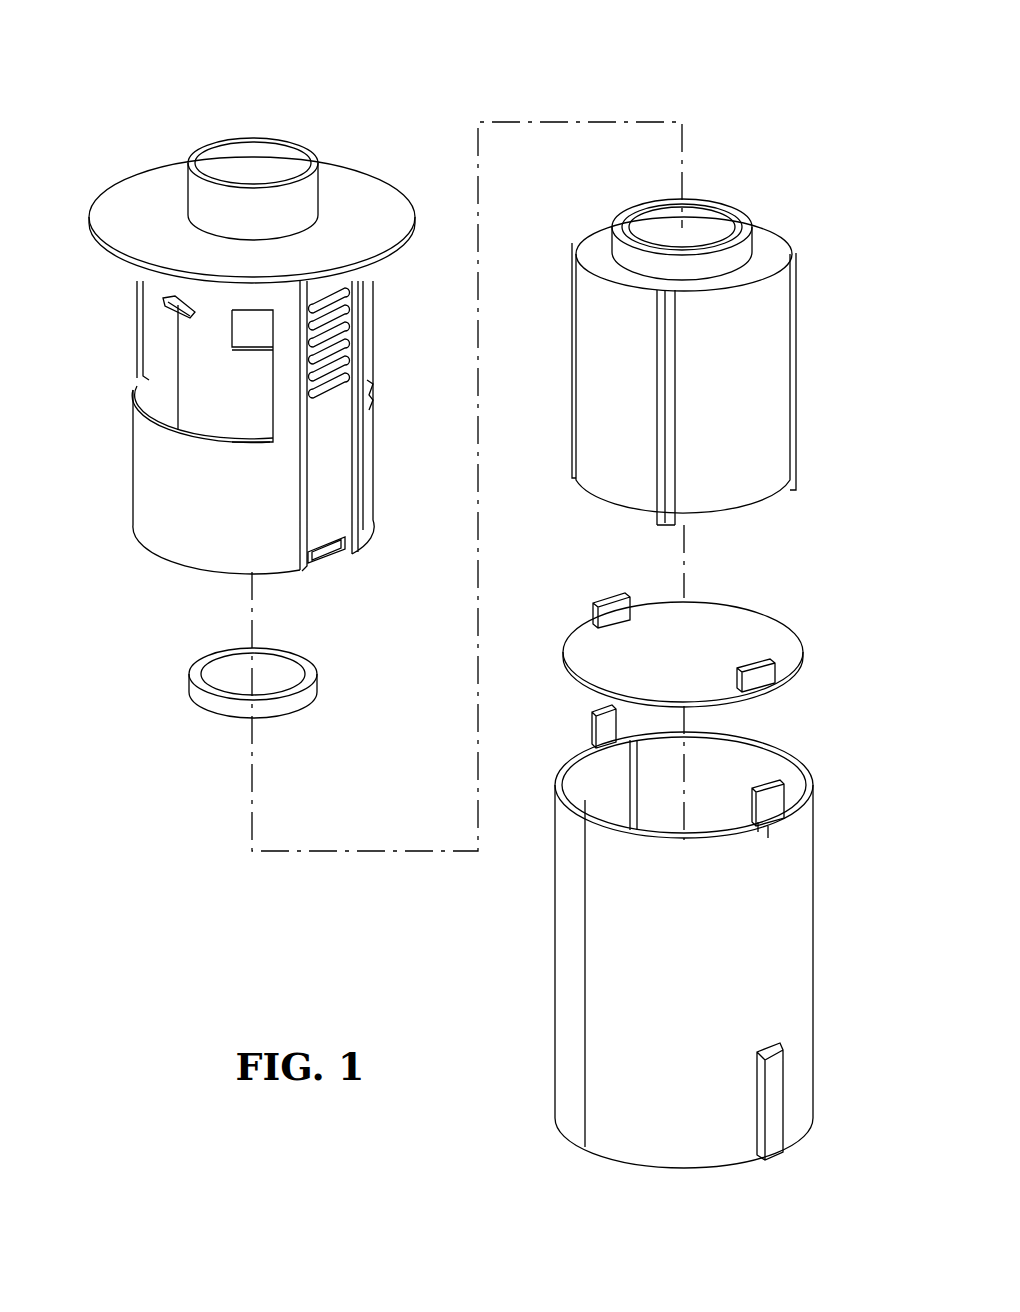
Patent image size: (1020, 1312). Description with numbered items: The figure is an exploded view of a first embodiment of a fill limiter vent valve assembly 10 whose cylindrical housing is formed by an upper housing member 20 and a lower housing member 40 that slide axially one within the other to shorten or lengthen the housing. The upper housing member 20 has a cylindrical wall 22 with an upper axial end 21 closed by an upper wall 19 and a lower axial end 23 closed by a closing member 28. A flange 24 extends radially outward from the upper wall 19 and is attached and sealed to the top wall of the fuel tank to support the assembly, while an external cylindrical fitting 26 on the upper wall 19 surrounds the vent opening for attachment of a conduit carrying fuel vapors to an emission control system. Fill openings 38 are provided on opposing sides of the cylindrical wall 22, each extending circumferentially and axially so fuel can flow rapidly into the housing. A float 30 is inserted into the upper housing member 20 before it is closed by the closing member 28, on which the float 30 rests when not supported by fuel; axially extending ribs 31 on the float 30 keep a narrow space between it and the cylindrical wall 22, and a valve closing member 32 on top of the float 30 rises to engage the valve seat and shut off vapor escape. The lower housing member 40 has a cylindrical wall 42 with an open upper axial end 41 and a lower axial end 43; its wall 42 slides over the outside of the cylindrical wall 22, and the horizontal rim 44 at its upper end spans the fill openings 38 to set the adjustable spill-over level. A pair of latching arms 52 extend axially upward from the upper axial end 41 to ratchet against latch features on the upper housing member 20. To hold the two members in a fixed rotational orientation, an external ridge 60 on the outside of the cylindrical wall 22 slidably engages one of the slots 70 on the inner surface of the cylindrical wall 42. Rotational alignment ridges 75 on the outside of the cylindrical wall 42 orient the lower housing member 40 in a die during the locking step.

The fill limiter vent valve assembly 10 is at (112, 98).
The upper housing member 20 is at (405, 103).
The upper wall 19 is at (173, 213).
The external cylindrical fitting 26 is at (308, 185).
The flange 24 is at (402, 222).
The closing member 28 is at (592, 640).
The upper axial end 21 is at (167, 297).
The fill openings 38 is at (138, 388).
The cylindrical wall 22 is at (142, 453).
The lower axial end 23 is at (158, 540).
The external ridge 60 is at (357, 512).
The valve closing member 32 is at (207, 702).
The float 30 is at (782, 240).
The axially extending ribs 31 is at (672, 512).
The lower housing member 40 is at (812, 950).
The upper axial end 41 is at (556, 800).
The cylindrical wall 42 is at (563, 952).
The lower axial end 43 is at (575, 1125).
The horizontal rim 44 is at (808, 787).
The latching arms 52 is at (765, 810).
The slots 70 is at (787, 812).
The rotational alignment ridges 75 is at (777, 1120).